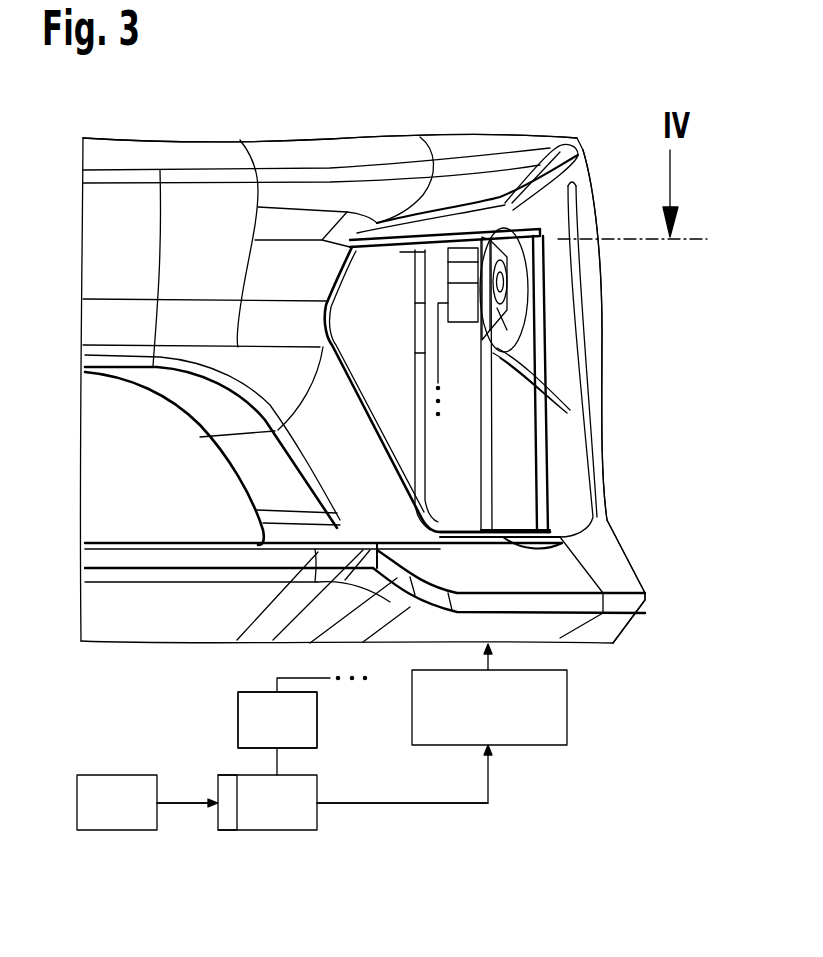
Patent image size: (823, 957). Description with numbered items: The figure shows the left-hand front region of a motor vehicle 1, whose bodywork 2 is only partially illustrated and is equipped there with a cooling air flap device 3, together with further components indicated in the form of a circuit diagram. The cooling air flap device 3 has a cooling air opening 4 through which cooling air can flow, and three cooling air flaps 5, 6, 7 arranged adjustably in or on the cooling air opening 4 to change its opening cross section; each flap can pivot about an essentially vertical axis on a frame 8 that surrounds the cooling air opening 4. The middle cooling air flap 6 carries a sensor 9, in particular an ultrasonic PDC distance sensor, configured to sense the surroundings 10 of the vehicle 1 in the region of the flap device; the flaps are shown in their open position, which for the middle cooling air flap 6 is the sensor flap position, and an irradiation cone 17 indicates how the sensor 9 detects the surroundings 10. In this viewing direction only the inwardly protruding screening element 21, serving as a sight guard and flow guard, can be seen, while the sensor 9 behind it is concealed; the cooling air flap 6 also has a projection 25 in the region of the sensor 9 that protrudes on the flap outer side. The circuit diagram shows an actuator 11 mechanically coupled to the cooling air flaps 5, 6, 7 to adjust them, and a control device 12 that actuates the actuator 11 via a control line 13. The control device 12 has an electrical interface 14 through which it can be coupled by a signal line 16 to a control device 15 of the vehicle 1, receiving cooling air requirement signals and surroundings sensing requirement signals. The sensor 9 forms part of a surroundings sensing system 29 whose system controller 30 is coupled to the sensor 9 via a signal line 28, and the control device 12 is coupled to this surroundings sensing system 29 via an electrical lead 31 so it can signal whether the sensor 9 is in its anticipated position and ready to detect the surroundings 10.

The motor vehicle 1 is at (638, 559).
The bodywork 2 is at (652, 623).
The cooling air flap device 3 is at (569, 815).
The cooling air opening 4 is at (503, 537).
The cooling air flap 5 is at (413, 273).
The middle cooling air flap 6 is at (488, 483).
The cooling air flap 7 is at (543, 448).
The frame 8 is at (487, 508).
The sensor 9 is at (507, 282).
The surroundings 10 is at (738, 382).
The actuator 11 is at (567, 708).
The control device 12 is at (290, 830).
The control line 13 is at (430, 803).
The electrical interface 14 is at (218, 817).
The control device of the vehicle 15 is at (100, 830).
The signal line 16 is at (183, 803).
The irradiation cone 17 is at (604, 308).
The screening element 21 is at (464, 276).
The projection 25 is at (517, 330).
The signal line 28 is at (443, 357).
The surroundings sensing system 29 is at (220, 700).
The system controller 30 is at (238, 725).
The electrical lead 31 is at (280, 763).